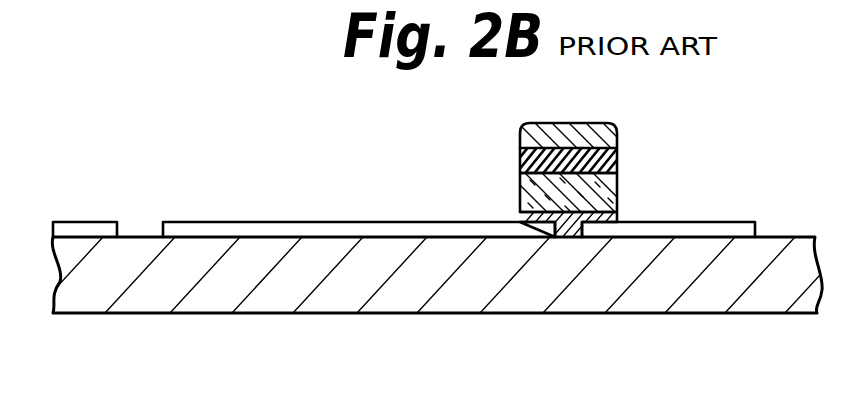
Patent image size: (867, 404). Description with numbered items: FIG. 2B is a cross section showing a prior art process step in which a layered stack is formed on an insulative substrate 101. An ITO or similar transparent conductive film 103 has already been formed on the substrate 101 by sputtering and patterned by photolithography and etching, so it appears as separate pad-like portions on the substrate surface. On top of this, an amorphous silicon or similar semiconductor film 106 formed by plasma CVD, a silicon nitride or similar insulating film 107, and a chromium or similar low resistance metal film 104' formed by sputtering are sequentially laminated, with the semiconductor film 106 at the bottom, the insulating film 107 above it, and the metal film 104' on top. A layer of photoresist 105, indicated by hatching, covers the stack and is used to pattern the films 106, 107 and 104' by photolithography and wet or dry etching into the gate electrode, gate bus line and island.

The insulative substrate 101 is at (702, 290).
The transparent conductive film 103 is at (737, 222).
The low resistance metal film 104' is at (608, 148).
The photoresist 105 is at (538, 133).
The semiconductor film 106 is at (618, 217).
The insulating film 107 is at (530, 195).